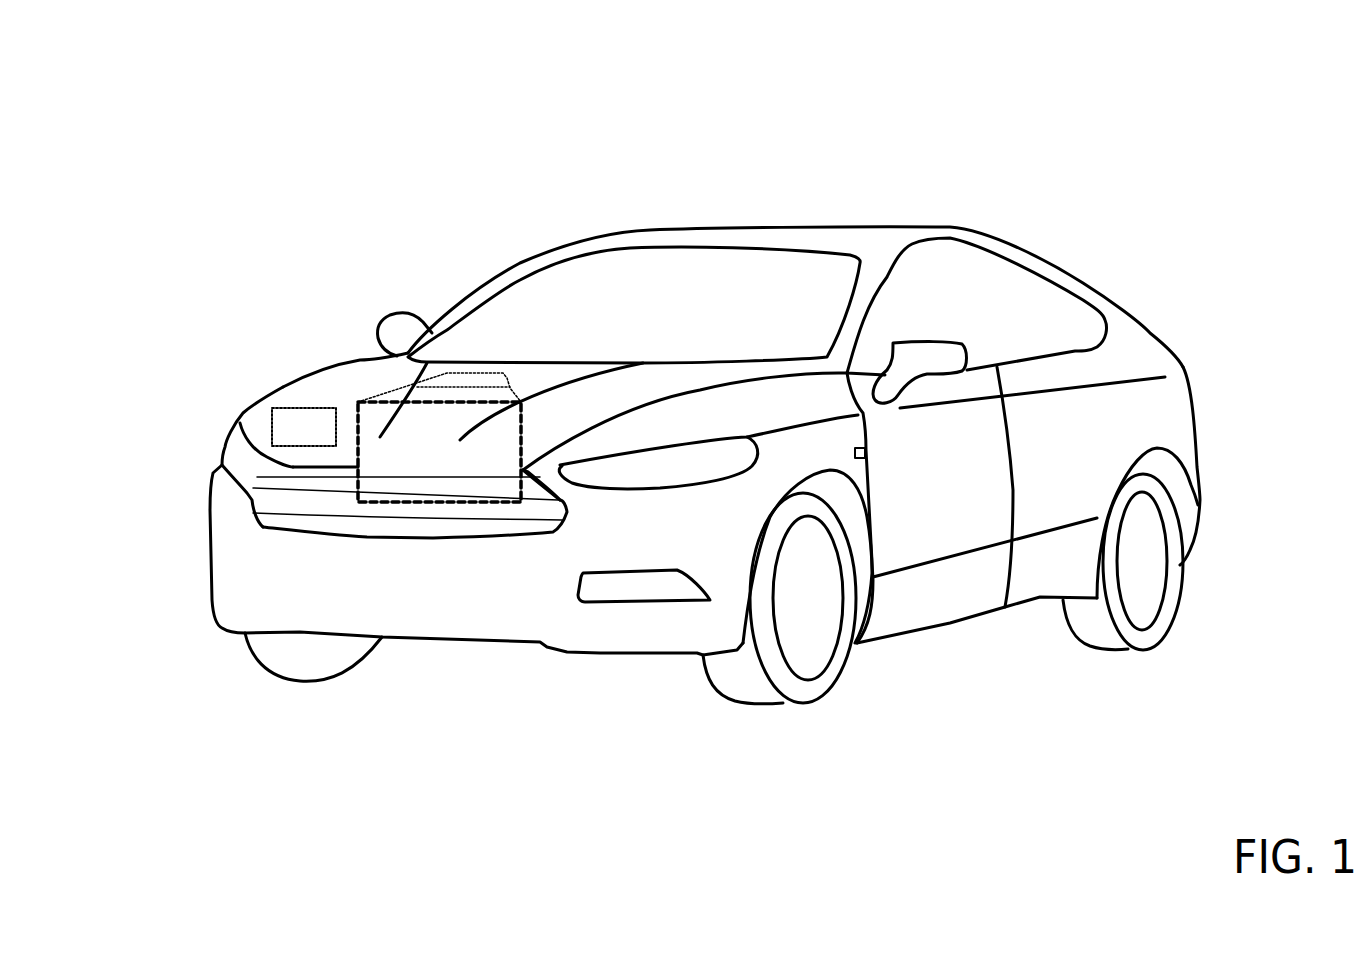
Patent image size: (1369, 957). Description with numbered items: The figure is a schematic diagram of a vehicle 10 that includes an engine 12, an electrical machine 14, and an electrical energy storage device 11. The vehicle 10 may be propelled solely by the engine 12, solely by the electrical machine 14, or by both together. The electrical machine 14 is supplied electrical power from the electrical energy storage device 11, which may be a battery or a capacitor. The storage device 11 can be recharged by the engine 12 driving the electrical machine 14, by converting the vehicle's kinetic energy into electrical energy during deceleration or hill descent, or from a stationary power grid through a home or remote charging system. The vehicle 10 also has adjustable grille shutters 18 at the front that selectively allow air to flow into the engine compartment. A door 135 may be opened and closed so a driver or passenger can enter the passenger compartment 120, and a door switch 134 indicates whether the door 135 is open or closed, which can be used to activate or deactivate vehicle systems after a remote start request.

The vehicle 10 is at (135, 103).
The electrical energy storage device 11 is at (316, 439).
The engine 12 is at (453, 467).
The electrical machine 14 is at (505, 381).
The adjustable grille shutters 18 is at (300, 510).
The passenger compartment 120 is at (698, 298).
The door switch 134 is at (865, 458).
The door 135 is at (935, 597).